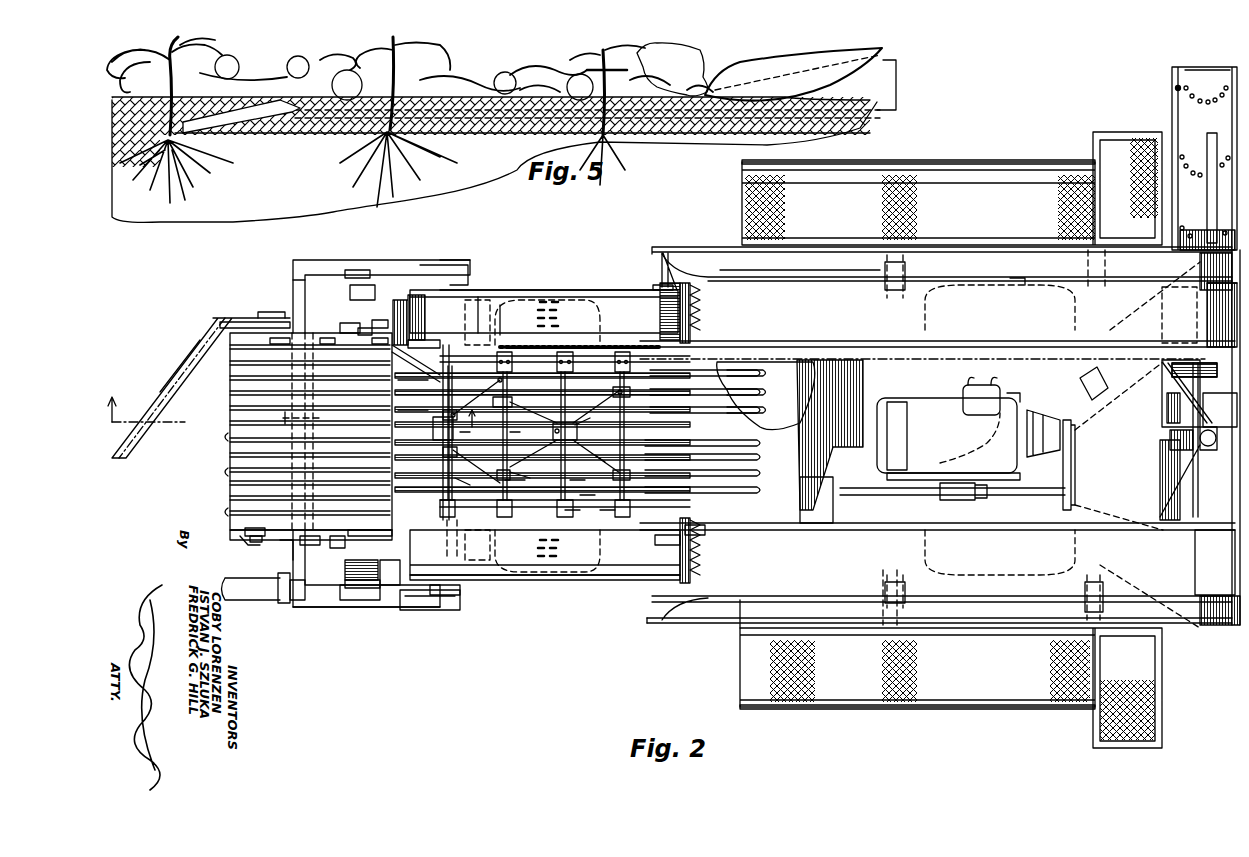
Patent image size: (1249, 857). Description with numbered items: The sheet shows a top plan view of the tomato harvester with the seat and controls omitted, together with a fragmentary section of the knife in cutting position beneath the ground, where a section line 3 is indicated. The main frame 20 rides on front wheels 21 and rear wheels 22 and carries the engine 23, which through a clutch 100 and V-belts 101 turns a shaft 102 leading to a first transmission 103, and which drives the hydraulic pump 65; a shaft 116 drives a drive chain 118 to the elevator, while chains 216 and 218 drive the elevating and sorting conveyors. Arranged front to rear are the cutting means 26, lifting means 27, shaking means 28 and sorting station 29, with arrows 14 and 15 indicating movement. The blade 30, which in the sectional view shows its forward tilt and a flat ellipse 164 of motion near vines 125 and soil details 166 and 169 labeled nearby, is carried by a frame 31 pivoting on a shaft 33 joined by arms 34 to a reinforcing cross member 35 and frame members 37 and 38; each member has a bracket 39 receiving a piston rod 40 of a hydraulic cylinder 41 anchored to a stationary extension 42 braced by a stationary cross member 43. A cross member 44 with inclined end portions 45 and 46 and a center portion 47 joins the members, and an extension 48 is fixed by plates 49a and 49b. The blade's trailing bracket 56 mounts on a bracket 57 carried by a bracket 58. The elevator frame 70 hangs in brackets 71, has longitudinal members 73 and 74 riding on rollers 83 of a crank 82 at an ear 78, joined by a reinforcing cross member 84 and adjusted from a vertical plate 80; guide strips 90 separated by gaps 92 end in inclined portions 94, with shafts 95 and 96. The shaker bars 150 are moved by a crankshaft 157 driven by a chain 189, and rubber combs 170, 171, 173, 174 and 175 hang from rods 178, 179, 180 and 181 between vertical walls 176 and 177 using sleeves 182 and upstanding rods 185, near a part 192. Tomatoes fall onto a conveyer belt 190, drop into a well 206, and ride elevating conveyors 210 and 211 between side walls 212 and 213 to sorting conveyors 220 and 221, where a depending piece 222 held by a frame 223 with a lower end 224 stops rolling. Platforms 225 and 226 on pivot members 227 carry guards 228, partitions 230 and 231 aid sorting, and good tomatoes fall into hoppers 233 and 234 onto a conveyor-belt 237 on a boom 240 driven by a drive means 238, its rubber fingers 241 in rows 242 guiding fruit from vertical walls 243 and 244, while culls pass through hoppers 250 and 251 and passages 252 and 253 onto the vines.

In FIG. 2, the section line arrow 3 is at (296, 412).
In FIG. 2, the direction arrow 14 is at (539, 387).
In FIG. 2, the finger bars 15 is at (675, 470).
In FIG. 2, the main frame 20 is at (655, 630).
In FIG. 2, the front wheels 21 is at (617, 300).
In FIG. 2, the rear wheels 22 is at (950, 370).
In FIG. 2, the engine 23 is at (965, 445).
In FIG. 2, the cutting means 26 is at (158, 384).
In FIG. 2, the lifting means 27 is at (246, 553).
In FIG. 2, the shaking means 28 is at (660, 311).
In FIG. 2, the sorting station 29 is at (735, 616).
In FIG. 5, the blade 30 is at (240, 133).
In FIG. 2, the blade 30 is at (172, 404).
In FIG. 2, the frame 31 is at (330, 612).
In FIG. 2, the shaft 33 is at (523, 482).
In FIG. 2, the arms 34 is at (495, 315).
In FIG. 2, the reinforcing cross member 35 is at (471, 482).
In FIG. 2, the frame member 37 is at (395, 590).
In FIG. 2, the frame member 38 is at (343, 262).
In FIG. 2, the bracket 39 is at (445, 265).
In FIG. 2, the piston rod 40 is at (478, 297).
In FIG. 2, the hydraulic cylinder 41 is at (415, 268).
In FIG. 2, the stationary extension 42 is at (350, 295).
In FIG. 2, the stationary cross member 43 is at (409, 313).
In FIG. 2, the cross member 44 is at (286, 557).
In FIG. 2, the inclined end portion 45 is at (300, 573).
In FIG. 2, the inclined end portion 46 is at (300, 293).
In FIG. 2, the center portion 47 is at (292, 417).
In FIG. 2, the extension 48 is at (232, 590).
In FIG. 2, the plate 49a is at (290, 605).
In FIG. 2, the plate 49b is at (278, 605).
In FIG. 5, the bracket 56 is at (896, 72).
In FIG. 2, the bracket 56 is at (236, 322).
In FIG. 2, the bracket 57 is at (272, 316).
In FIG. 2, the bracket 58 is at (363, 325).
In FIG. 2, the hydraulic pump 65 is at (962, 415).
In FIG. 2, the frame 70 is at (342, 547).
In FIG. 2, the brackets 71 is at (418, 328).
In FIG. 2, the longitudinally extending member 73 is at (332, 340).
In FIG. 2, the longitudinally extending member 74 is at (352, 533).
In FIG. 2, the ear 78 is at (232, 368).
In FIG. 2, the vertical plate 80 is at (308, 545).
In FIG. 2, the crank 82 is at (350, 325).
In FIG. 2, the roller 83 is at (280, 342).
In FIG. 2, the reinforcing cross member 84 is at (320, 417).
In FIG. 2, the guide strips 90 is at (226, 515).
In FIG. 2, the gaps 92 is at (226, 475).
In FIG. 2, the rear inclined end portion 94 is at (410, 406).
In FIG. 2, the shaft 95 is at (374, 340).
In FIG. 2, the shaft 96 is at (385, 508).
In FIG. 2, the clutch 100 is at (1060, 444).
In FIG. 2, the V-belts 101 is at (1074, 455).
In FIG. 2, the shaft 102 is at (1010, 498).
In FIG. 2, the first transmission 103 is at (834, 505).
In FIG. 2, the shaft 116 is at (458, 545).
In FIG. 2, the drive chain 118 is at (372, 578).
In FIG. 5, the vine 125 is at (655, 52).
In FIG. 2, the vine 125 is at (226, 437).
In FIG. 2, the bars 150 is at (578, 385).
In FIG. 2, the crankshaft 157 is at (500, 330).
In FIG. 5, the flat ellipse 164 is at (785, 75).
In FIG. 2, the bar 166 is at (413, 385).
In FIG. 2, the fan housing 169 is at (766, 384).
In FIG. 2, the rubber comb 170 is at (467, 408).
In FIG. 2, the rubber comb 171 is at (487, 462).
In FIG. 2, the rubber comb 173 is at (533, 453).
In FIG. 2, the rubber comb 174 is at (585, 408).
In FIG. 2, the rubber comb 175 is at (592, 447).
In FIG. 2, the vertical wall 176 is at (608, 511).
In FIG. 2, the vertical wall 177 is at (470, 352).
In FIG. 2, the rod 178 is at (467, 436).
In FIG. 2, the rod 179 is at (526, 433).
In FIG. 2, the rod 180 is at (570, 510).
In FIG. 2, the rod 181 is at (597, 497).
In FIG. 2, the sleeves 182 is at (425, 426).
In FIG. 2, the upstanding rods 185 is at (528, 474).
In FIG. 2, the chain 189 is at (592, 345).
In FIG. 2, the conveyer belt 190 is at (588, 482).
In FIG. 2, the link 192 is at (535, 407).
In FIG. 2, the well 206 is at (378, 320).
In FIG. 2, the elevating conveyor 210 is at (525, 580).
In FIG. 2, the elevating conveyor 211 is at (495, 297).
In FIG. 2, the side wall 212 is at (540, 290).
In FIG. 2, the side wall 213 is at (540, 315).
In FIG. 2, the chain 216 is at (706, 532).
In FIG. 2, the chains 218 is at (1055, 372).
In FIG. 2, the sorting conveyor 220 is at (840, 565).
In FIG. 2, the sorting conveyor 221 is at (840, 321).
In FIG. 2, the depending piece 222 is at (708, 300).
In FIG. 2, the frame 223 is at (660, 270).
In FIG. 2, the lower end 224 is at (712, 320).
In FIG. 2, the platform 225 is at (980, 671).
In FIG. 2, the platform 226 is at (1020, 211).
In FIG. 2, the pivot members 227 is at (906, 267).
In FIG. 2, the guards 228 is at (985, 170).
In FIG. 2, the partition 230 is at (872, 600).
In FIG. 2, the partition 231 is at (855, 281).
In FIG. 2, the hopper 233 is at (1228, 566).
In FIG. 2, the hopper 234 is at (1205, 310).
In FIG. 2, the conveyor-belt 237 is at (1228, 120).
In FIG. 2, the drive means 238 is at (1165, 413).
In FIG. 2, the boom 240 is at (1228, 190).
In FIG. 2, the rubber fingers 241 is at (1190, 98).
In FIG. 2, the rows 242 is at (1174, 88).
In FIG. 2, the vertical wall 243 is at (1172, 112).
In FIG. 2, the vertical wall 244 is at (1207, 131).
In FIG. 2, the hopper 250 is at (1225, 626).
In FIG. 2, the hopper 251 is at (1198, 265).
In FIG. 2, the passage 252 is at (1130, 562).
In FIG. 2, the passage 253 is at (1145, 315).